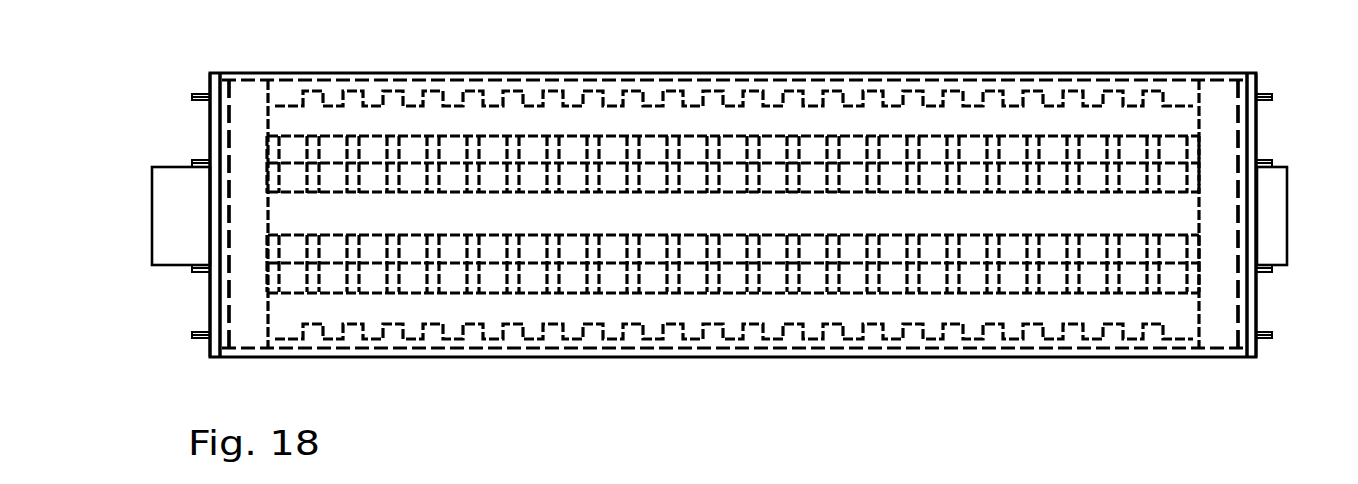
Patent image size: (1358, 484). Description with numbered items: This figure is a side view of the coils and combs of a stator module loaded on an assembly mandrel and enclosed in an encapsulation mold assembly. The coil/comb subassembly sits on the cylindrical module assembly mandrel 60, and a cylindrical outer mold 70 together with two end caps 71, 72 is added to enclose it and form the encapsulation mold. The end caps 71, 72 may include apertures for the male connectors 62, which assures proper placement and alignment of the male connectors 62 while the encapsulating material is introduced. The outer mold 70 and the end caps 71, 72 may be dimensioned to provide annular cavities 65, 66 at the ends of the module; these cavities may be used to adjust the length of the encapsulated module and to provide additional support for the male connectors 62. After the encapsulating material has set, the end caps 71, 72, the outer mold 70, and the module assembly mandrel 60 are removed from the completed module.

The module assembly mandrel 60 is at (1290, 252).
The male connectors 62 is at (192, 97).
The annular cavity 65 is at (250, 297).
The annular cavity 66 is at (1220, 294).
The cylindrical outer mold 70 is at (733, 72).
The end cap 71 is at (211, 71).
The end cap 72 is at (1249, 71).